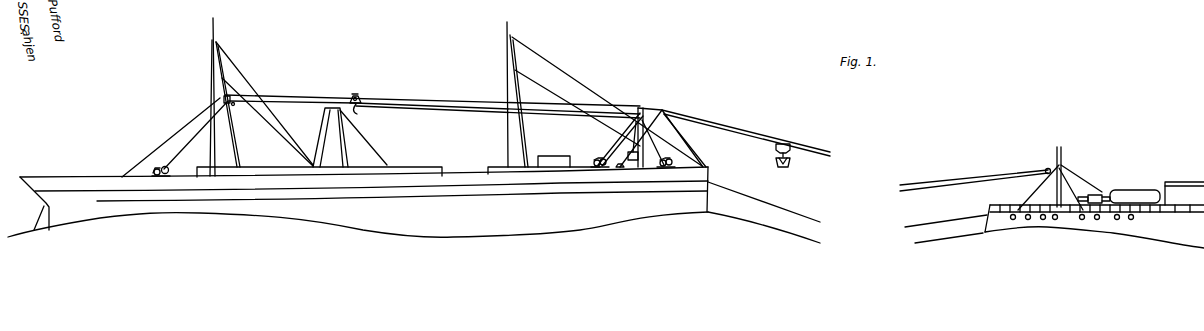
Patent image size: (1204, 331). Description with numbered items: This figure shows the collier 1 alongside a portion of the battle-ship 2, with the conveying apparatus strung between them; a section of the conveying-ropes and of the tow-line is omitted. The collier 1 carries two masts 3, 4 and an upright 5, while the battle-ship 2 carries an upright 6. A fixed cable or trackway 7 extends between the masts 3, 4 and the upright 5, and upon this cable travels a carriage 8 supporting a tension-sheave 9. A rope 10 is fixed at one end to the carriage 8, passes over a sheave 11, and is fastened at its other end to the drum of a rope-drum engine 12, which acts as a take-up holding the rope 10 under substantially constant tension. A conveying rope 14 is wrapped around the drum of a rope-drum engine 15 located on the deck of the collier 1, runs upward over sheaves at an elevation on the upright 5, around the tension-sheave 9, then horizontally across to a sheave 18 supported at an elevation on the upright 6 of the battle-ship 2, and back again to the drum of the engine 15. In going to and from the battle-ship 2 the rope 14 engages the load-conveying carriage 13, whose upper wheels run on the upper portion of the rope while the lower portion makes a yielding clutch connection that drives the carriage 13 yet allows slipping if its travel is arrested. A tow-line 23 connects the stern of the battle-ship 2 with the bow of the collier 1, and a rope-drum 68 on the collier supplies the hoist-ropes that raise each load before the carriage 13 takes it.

The collier 1 is at (358, 127).
The battle-ship 2 is at (1094, 215).
The mast of the collier 3 is at (237, 138).
The mast of the collier 4 is at (527, 137).
The upright on the collier 5 is at (648, 103).
The upright on the battle-ship 6 is at (1063, 157).
The fixed cable or trackway 7 is at (457, 98).
The carriage 8 is at (360, 97).
The sheave 9 is at (361, 114).
The rope 10 is at (293, 102).
The sheave 11 is at (231, 103).
The rope-drum engine 12 is at (168, 168).
The load-conveying carriage 13 is at (789, 142).
The rope 14 is at (450, 112).
The rope-drum engine 15 is at (600, 171).
The sheave 18 is at (1045, 169).
The tow-line 23 is at (808, 215).
The rope-drum 68 is at (664, 170).